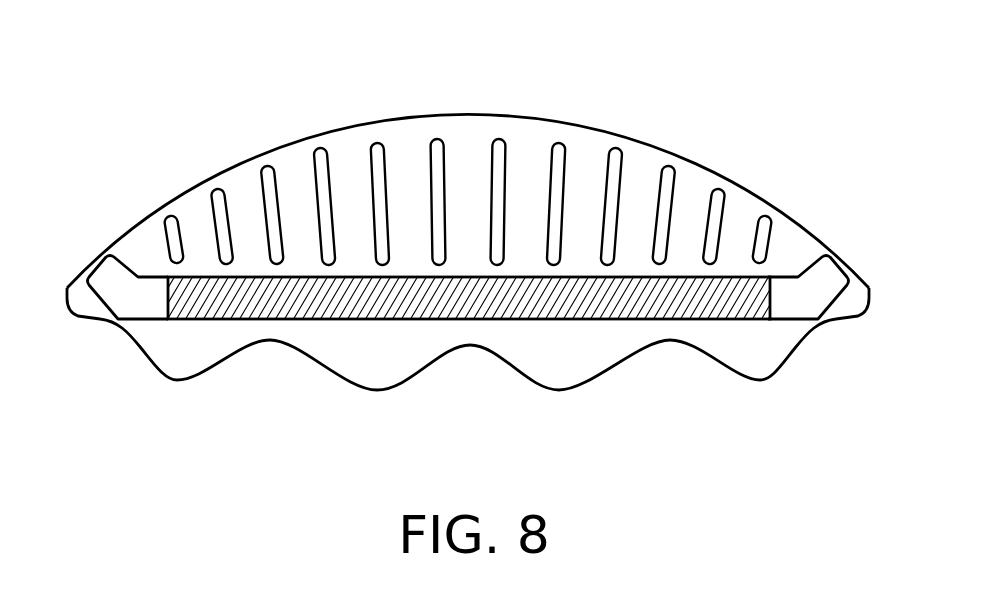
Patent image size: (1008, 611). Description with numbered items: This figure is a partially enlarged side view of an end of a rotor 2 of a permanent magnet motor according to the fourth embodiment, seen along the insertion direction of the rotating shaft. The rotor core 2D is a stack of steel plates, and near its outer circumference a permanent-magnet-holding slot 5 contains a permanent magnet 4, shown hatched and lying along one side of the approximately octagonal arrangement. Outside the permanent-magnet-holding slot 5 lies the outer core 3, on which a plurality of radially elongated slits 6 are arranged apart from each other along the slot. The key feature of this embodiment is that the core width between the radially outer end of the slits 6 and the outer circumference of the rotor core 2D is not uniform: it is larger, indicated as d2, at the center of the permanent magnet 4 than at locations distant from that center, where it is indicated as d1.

The rotor 2 is at (637, 141).
The rotor core 2D is at (733, 190).
The outer core 3 is at (342, 138).
The permanent magnet 4 is at (468, 298).
The permanent-magnet-holding slot 5 is at (105, 273).
The slit 6 is at (553, 130).
The core width at locations distant from the magnet center d1 is at (218, 212).
The core width at the magnet center d2 is at (423, 137).